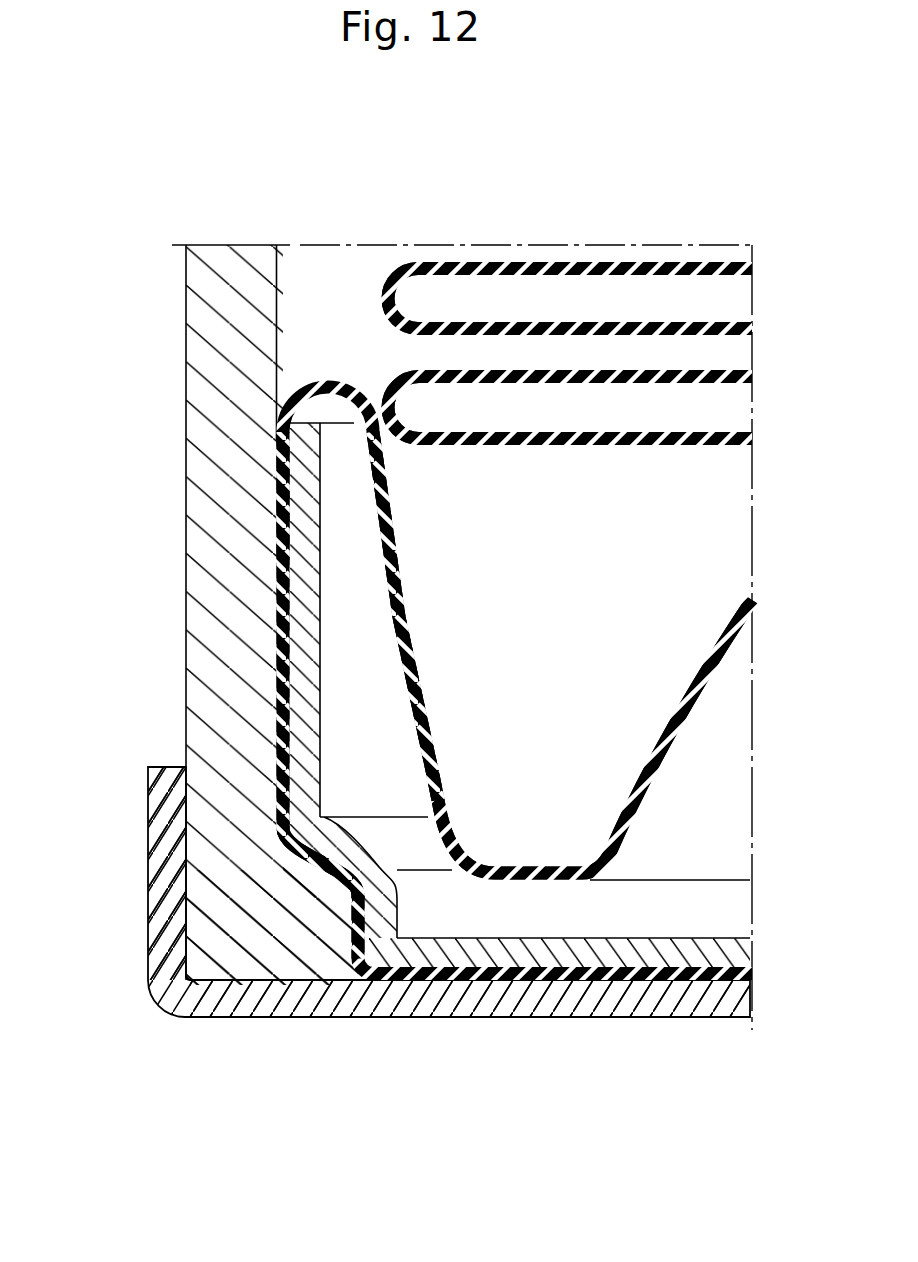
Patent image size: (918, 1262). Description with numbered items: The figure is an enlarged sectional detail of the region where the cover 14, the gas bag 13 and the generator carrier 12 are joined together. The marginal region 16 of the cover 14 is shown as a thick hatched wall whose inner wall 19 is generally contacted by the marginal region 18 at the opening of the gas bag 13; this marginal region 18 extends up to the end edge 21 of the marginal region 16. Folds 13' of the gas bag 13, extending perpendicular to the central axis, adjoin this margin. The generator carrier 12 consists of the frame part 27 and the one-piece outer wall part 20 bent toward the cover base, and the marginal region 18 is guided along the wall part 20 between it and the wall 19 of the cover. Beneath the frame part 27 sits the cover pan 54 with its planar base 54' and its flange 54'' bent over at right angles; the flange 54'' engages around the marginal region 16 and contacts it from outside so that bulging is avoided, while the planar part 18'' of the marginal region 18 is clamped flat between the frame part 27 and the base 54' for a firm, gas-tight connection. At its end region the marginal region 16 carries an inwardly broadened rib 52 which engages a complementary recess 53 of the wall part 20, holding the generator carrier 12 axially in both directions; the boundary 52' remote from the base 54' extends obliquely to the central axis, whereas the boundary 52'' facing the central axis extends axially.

The generator carrier 12 is at (707, 933).
The gas bag 13 is at (570, 284).
The folds 13' is at (366, 309).
The cover 14 is at (223, 244).
The marginal region of the cover 16 is at (224, 907).
The marginal region at the opening 18 is at (429, 680).
The planar part 18'' is at (576, 1031).
The inner wall 19 is at (276, 492).
The wall part 20 is at (305, 600).
The end edge 21 is at (211, 966).
The frame part 27 is at (747, 947).
The rib 52 is at (272, 957).
The boundary of the rib remote from the base 52' is at (220, 864).
The boundary of the rib facing the central axis 52'' is at (382, 680).
The recess 53 is at (338, 855).
The cover pan 54 is at (449, 945).
The planar base 54' is at (470, 1047).
The flange 54'' is at (124, 873).